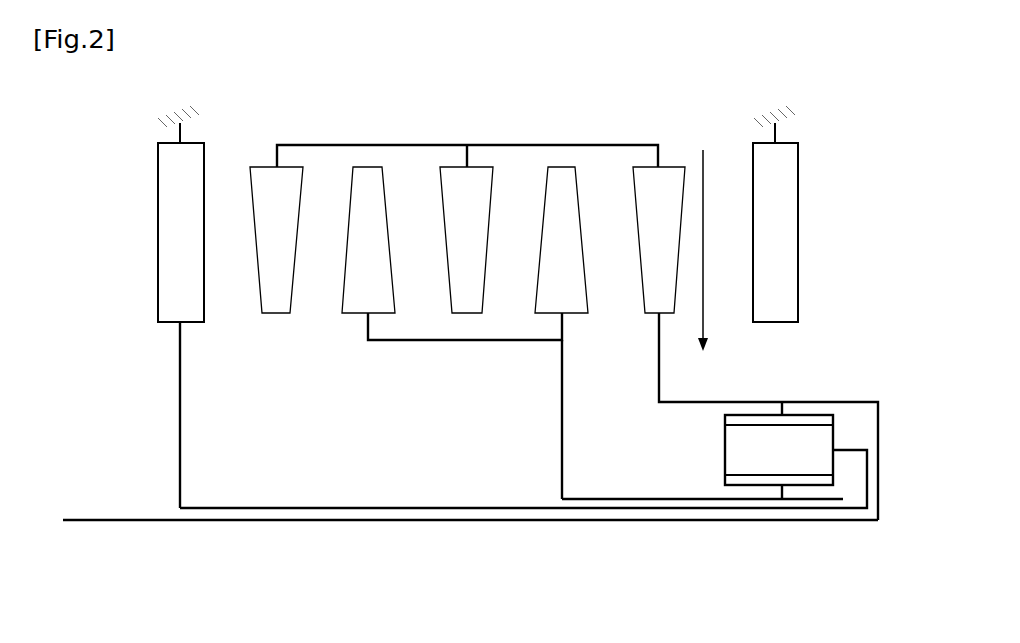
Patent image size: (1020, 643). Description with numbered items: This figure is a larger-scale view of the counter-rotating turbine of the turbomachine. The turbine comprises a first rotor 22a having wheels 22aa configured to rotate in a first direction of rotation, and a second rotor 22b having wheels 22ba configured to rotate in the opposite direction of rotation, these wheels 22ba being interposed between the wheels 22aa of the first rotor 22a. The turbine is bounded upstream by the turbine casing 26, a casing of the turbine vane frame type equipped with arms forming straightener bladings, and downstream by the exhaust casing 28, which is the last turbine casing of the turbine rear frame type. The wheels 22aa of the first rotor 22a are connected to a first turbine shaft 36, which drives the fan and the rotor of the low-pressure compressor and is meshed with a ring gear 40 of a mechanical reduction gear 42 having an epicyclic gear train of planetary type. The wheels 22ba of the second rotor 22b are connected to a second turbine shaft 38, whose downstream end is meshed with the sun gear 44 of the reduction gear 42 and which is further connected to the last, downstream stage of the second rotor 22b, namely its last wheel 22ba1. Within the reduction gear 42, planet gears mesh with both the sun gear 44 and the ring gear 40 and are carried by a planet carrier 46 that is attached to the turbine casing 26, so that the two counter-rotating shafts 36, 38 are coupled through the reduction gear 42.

The first rotor 22a is at (358, 320).
The wheels of first rotor 22aa is at (546, 273).
The second rotor 22b is at (319, 144).
The wheels of second rotor 22ba is at (487, 176).
The last wheel 22ba1 is at (660, 178).
The turbine casing 26 is at (155, 278).
The exhaust casing 28 is at (800, 258).
The first turbine shaft 36 is at (548, 522).
The second turbine shaft 38 is at (565, 463).
The ring gear 40 is at (785, 410).
The mechanical reduction gear 42 is at (704, 454).
The sun gear 44 is at (782, 491).
The planet carrier 46 is at (845, 448).